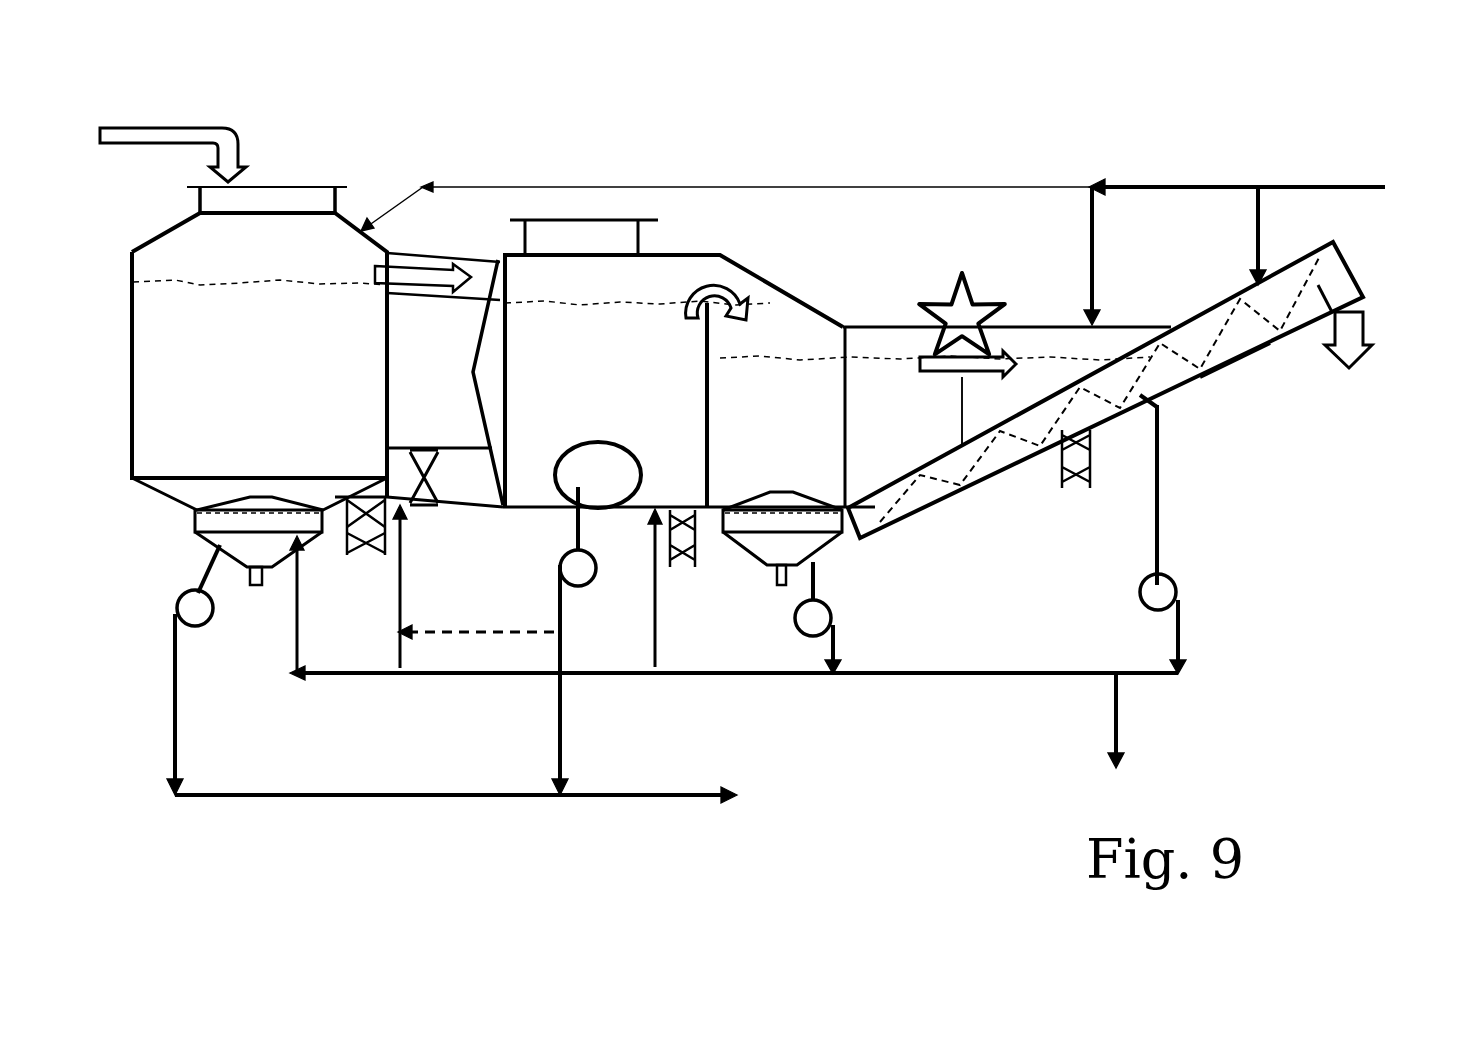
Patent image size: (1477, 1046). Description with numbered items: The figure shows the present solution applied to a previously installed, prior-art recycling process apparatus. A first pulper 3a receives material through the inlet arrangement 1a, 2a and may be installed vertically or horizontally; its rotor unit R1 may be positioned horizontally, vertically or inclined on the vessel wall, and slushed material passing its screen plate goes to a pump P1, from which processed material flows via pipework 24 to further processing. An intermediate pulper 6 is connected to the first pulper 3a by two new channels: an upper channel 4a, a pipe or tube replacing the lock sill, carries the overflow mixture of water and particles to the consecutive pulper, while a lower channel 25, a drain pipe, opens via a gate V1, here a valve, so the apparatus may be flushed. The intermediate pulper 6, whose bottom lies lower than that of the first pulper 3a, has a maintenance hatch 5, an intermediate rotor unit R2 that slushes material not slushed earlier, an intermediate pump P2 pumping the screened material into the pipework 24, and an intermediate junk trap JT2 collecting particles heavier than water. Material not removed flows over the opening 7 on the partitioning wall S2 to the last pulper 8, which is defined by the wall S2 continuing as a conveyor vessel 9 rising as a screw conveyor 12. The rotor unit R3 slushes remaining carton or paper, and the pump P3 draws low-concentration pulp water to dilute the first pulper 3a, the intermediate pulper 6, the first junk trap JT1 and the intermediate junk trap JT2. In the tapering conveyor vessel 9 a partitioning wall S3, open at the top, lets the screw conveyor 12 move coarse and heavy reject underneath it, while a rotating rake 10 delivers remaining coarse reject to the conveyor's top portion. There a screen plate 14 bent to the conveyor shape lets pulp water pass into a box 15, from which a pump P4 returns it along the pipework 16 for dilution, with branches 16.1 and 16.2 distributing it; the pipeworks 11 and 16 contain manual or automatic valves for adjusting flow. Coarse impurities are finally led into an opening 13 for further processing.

The feed material inlet 1a is at (178, 127).
The inlet neck of first reactor 2a is at (307, 187).
The first pulper 3a is at (253, 381).
The upper channel 4a is at (457, 250).
The maintenance hatch 5 is at (541, 227).
The intermediate pulper 6 is at (628, 380).
The upper channel 7 is at (732, 277).
The last pulper 8 is at (795, 413).
The conveyor vessel 9 is at (918, 411).
The rotating rake 10 is at (962, 273).
The pipework 11 is at (1035, 188).
The screw conveyor 12 is at (1333, 273).
The opening 13 is at (1363, 300).
The screen plate 14 is at (1235, 360).
The box 15 is at (1180, 397).
The pipework 16 is at (292, 660).
The pipework 16.1 is at (430, 675).
The second return branch 16.2 is at (1118, 737).
The pipework 24 is at (213, 800).
The lower channel 25 is at (500, 513).
The pump P1 is at (172, 613).
The intermediate pump P2 is at (590, 587).
The pump P3 is at (820, 655).
The pump P4 is at (1180, 598).
The rotor unit R1 is at (238, 545).
The intermediate rotor unit R2 is at (590, 490).
The rotor unit R3 is at (872, 487).
The partitioning wall S2 is at (745, 528).
The partitioning wall S3 is at (958, 412).
The first junk trap JT1 is at (365, 555).
The intermediate junk trap JT2 is at (683, 567).
The gate V1 is at (467, 497).